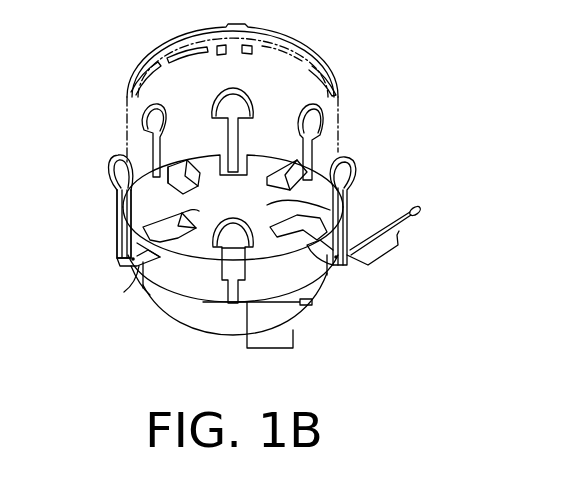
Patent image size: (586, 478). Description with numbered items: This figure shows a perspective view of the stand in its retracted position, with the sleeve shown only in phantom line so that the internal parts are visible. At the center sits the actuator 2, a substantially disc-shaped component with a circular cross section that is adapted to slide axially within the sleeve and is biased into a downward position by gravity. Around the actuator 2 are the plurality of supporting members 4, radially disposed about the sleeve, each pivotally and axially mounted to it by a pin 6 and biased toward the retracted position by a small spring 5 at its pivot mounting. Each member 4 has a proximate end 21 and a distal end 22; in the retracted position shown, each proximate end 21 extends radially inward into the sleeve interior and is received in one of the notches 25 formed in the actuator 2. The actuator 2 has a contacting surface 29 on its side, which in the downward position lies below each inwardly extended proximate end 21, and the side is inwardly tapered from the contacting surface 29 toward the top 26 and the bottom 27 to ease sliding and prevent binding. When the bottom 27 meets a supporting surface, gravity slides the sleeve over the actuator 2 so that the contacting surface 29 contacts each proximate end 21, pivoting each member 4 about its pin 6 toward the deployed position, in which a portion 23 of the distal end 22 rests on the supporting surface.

The actuator 2 is at (262, 162).
The supporting members 4 is at (119, 205).
The spring 5 is at (405, 259).
The pin 6 is at (423, 199).
The proximate end 21 is at (143, 277).
The distal end 22 is at (117, 187).
The portion of the distal end 23 is at (116, 158).
The notches 25 is at (199, 211).
The top 26 is at (336, 207).
The bottom 27 is at (227, 335).
The contacting surface 29 is at (143, 275).